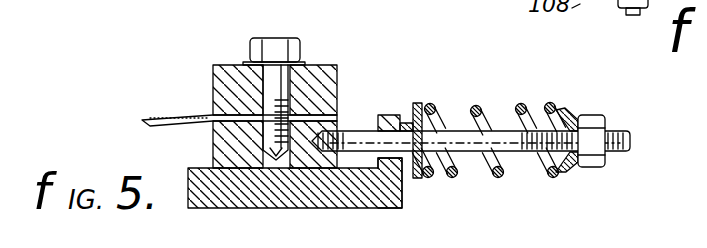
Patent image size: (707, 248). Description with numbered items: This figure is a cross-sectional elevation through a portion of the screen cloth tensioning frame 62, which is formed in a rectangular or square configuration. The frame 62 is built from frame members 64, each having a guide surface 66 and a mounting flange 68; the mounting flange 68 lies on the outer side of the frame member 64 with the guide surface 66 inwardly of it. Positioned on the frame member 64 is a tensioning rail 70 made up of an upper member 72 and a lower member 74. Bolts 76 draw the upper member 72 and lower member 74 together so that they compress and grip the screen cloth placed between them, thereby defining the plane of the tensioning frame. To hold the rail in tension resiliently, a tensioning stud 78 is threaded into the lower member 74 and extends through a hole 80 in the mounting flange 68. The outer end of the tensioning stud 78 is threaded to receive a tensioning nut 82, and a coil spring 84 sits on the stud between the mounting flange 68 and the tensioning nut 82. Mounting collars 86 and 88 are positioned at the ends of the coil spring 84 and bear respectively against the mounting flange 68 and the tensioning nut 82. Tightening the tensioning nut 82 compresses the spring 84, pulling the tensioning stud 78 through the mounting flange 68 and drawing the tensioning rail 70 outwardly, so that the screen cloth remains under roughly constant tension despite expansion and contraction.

The screen cloth tensioning frame 62 is at (414, 80).
The frame member 64 is at (336, 207).
The guide surface 66 is at (207, 168).
The mounting flange 68 is at (388, 114).
The tensioning rail 70 is at (214, 50).
The upper member 72 is at (221, 83).
The lower member 74 is at (212, 139).
The bolt 76 is at (289, 40).
The tensioning stud 78 is at (499, 130).
The hole 80 is at (381, 131).
The tensioning nut 82 is at (590, 115).
The coil spring 84 is at (499, 180).
The mounting collar 86 is at (412, 180).
The mounting collar 88 is at (562, 174).